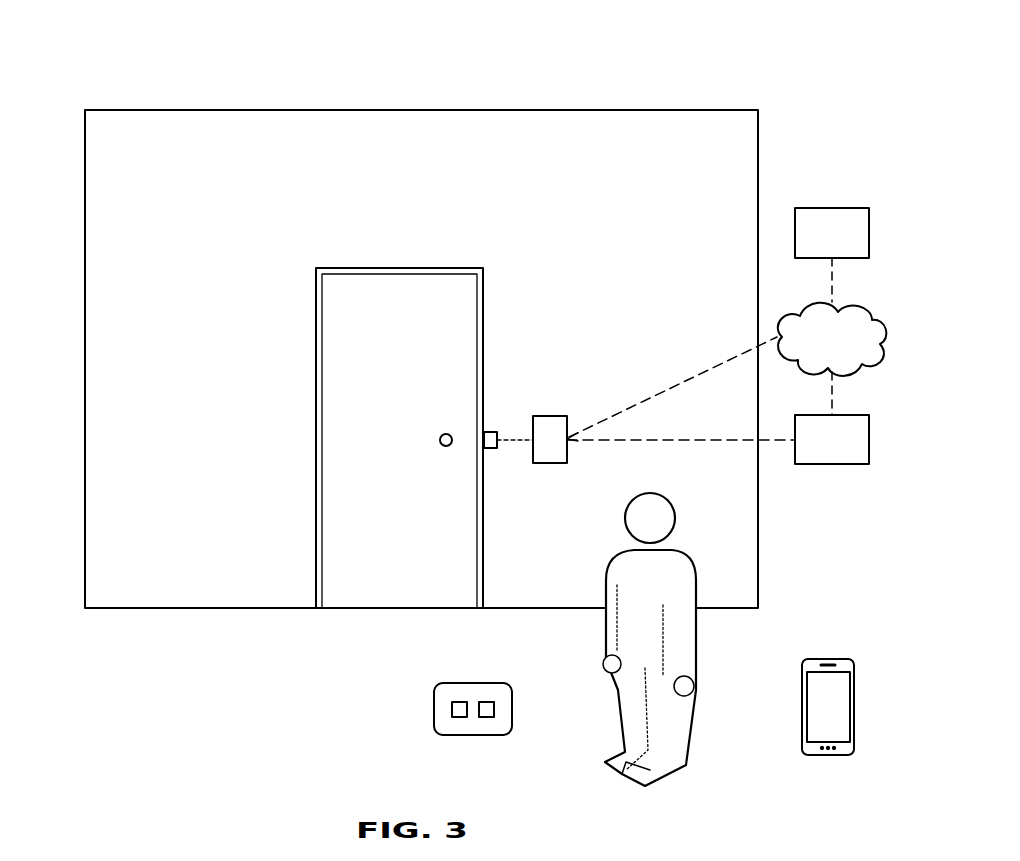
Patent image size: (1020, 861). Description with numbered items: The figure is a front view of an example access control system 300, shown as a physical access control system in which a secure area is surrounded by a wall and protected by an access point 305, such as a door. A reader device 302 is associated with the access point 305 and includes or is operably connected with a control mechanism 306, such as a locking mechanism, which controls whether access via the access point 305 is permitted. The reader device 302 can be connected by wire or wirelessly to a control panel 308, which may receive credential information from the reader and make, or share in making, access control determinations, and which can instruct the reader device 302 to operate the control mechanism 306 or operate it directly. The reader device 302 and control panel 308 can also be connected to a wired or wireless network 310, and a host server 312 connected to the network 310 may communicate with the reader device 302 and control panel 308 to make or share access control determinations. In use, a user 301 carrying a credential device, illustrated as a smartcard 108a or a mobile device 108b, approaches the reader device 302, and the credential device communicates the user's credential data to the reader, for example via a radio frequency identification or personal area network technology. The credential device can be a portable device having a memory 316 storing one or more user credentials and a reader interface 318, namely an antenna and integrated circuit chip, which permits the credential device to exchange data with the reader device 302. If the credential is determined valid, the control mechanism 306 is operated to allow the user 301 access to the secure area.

The access control system 300 is at (712, 42).
The access point 305 is at (468, 318).
The control mechanism 306 is at (490, 448).
The reader device 302 is at (556, 416).
The host server 312 is at (853, 258).
The network 310 is at (862, 372).
The control panel 308 is at (818, 464).
The user 301 is at (697, 657).
The memory 316 is at (463, 717).
The reader interface 318 is at (496, 706).
The smartcard 108a is at (434, 708).
The mobile device 108b is at (802, 708).